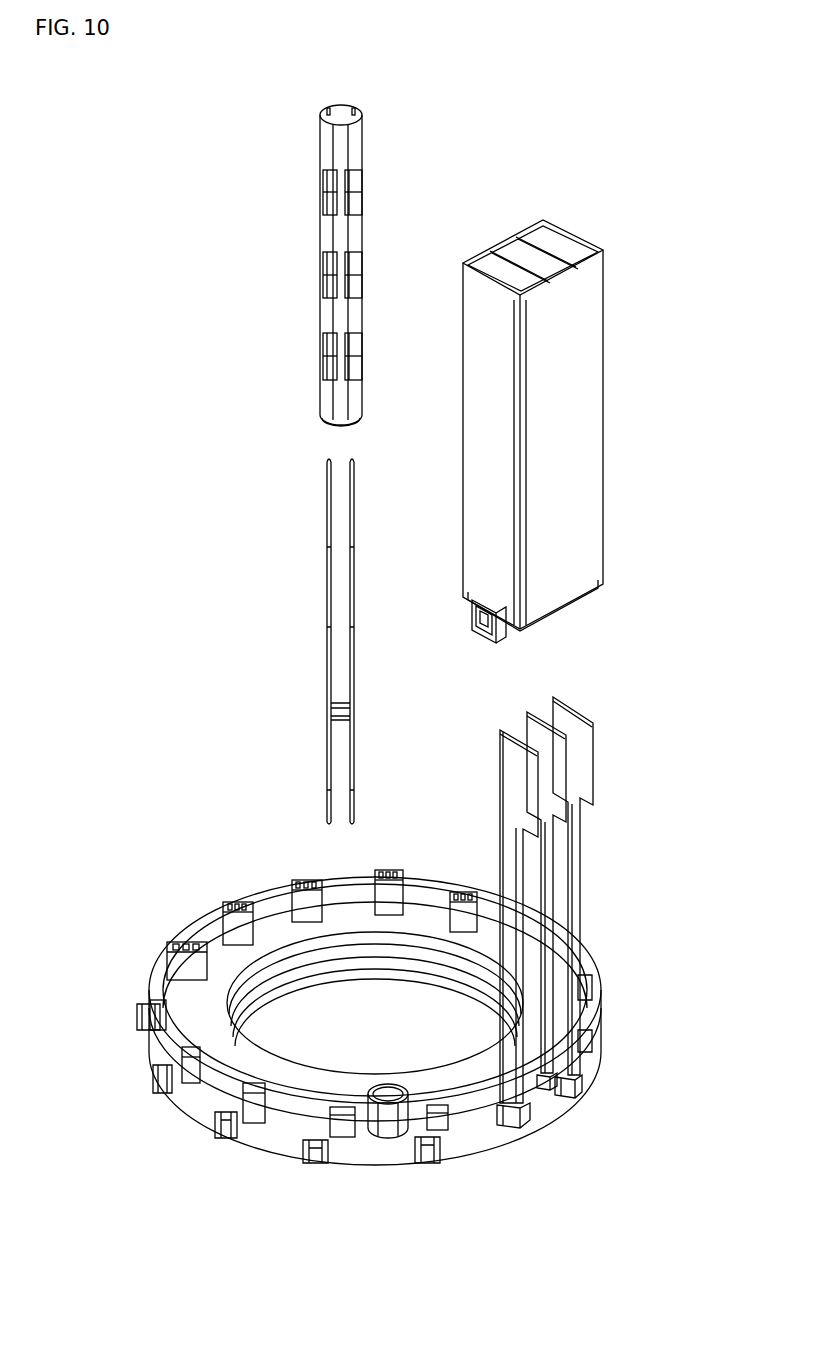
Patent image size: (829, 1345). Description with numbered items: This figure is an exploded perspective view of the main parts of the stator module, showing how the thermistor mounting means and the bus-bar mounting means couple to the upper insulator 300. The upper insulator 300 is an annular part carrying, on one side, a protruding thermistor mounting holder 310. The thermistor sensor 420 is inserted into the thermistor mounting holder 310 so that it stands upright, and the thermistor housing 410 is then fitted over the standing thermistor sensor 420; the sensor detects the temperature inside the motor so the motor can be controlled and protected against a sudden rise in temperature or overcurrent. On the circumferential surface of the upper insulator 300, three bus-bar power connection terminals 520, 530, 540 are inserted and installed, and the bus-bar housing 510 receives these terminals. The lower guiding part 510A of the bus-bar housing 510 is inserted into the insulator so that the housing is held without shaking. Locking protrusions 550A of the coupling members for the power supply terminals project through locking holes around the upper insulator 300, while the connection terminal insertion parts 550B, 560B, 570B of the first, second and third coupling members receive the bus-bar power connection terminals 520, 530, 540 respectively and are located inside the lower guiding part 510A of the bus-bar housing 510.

The upper insulator 300 is at (147, 936).
The thermistor mounting holder 310 is at (378, 1128).
The thermistor housing 410 is at (322, 320).
The thermistor sensor 420 is at (350, 472).
The bus-bar housing 510 is at (595, 403).
The lower guiding part 510A is at (492, 634).
The bus-bar power connection terminal 520 is at (575, 705).
The bus-bar power connection terminal 530 is at (510, 778).
The bus-bar power connection terminal 540 is at (570, 780).
The locking protrusion 550A is at (226, 1140).
The connection terminal insertion part 550B is at (585, 1082).
The connection terminal insertion part 560B is at (523, 1128).
The connection terminal insertion part 570B is at (550, 1092).